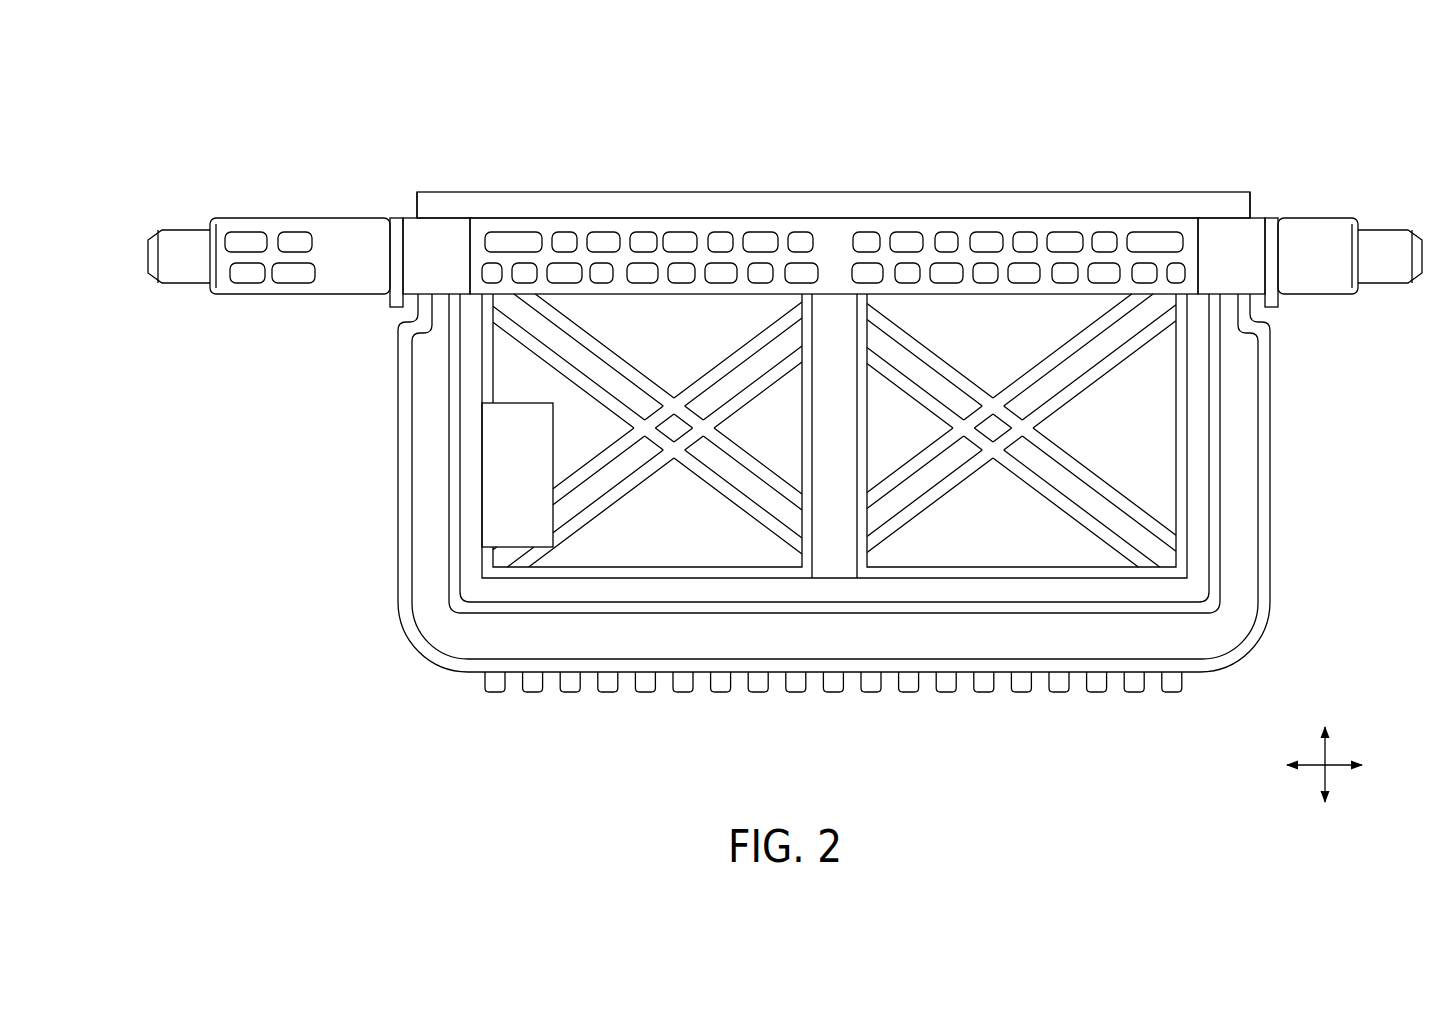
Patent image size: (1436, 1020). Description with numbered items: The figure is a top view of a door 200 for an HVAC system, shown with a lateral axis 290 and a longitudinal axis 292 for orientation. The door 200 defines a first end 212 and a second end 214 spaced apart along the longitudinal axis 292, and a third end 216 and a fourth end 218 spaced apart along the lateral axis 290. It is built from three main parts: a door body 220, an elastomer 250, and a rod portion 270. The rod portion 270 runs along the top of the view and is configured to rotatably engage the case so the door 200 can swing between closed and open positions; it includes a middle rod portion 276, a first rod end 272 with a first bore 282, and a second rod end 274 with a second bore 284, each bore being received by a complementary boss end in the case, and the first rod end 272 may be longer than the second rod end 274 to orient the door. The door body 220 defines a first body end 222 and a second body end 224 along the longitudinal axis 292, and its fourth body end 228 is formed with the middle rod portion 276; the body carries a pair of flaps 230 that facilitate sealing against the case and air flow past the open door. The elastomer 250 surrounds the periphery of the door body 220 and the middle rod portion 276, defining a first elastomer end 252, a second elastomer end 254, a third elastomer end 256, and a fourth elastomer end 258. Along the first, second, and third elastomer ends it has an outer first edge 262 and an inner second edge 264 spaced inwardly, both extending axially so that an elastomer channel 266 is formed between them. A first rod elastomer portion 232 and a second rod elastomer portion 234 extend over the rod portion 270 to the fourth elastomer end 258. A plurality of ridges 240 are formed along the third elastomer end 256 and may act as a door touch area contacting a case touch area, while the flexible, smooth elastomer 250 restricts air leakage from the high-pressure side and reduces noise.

The door 200 is at (1272, 92).
The first end 212 is at (372, 494).
The second end 214 is at (1283, 497).
The third end 216 is at (767, 718).
The fourth end 218 is at (822, 185).
The door body 220 is at (832, 568).
The first body end 222 is at (480, 445).
The second body end 224 is at (1218, 474).
The fourth body end 228 is at (940, 286).
The flaps 230 is at (995, 330).
The first rod elastomer portion 232 is at (437, 240).
The second rod elastomer portion 234 is at (1245, 240).
The ridges 240 is at (1018, 684).
The elastomer 250 is at (508, 637).
The first elastomer end 252 is at (396, 396).
The second elastomer end 254 is at (1268, 593).
The third elastomer end 256 is at (1205, 677).
The fourth elastomer end 258 is at (524, 180).
The first edge 262 is at (428, 658).
The second edge 264 is at (452, 556).
The elastomer channel 266 is at (444, 612).
The rod portion 270 is at (352, 207).
The first rod end 272 is at (268, 283).
The second rod end 274 is at (1312, 287).
The middle rod portion 276 is at (590, 236).
The first bore 282 is at (178, 245).
The second bore 284 is at (1387, 275).
The lateral axis 290 is at (1330, 769).
The longitudinal axis 292 is at (1333, 760).